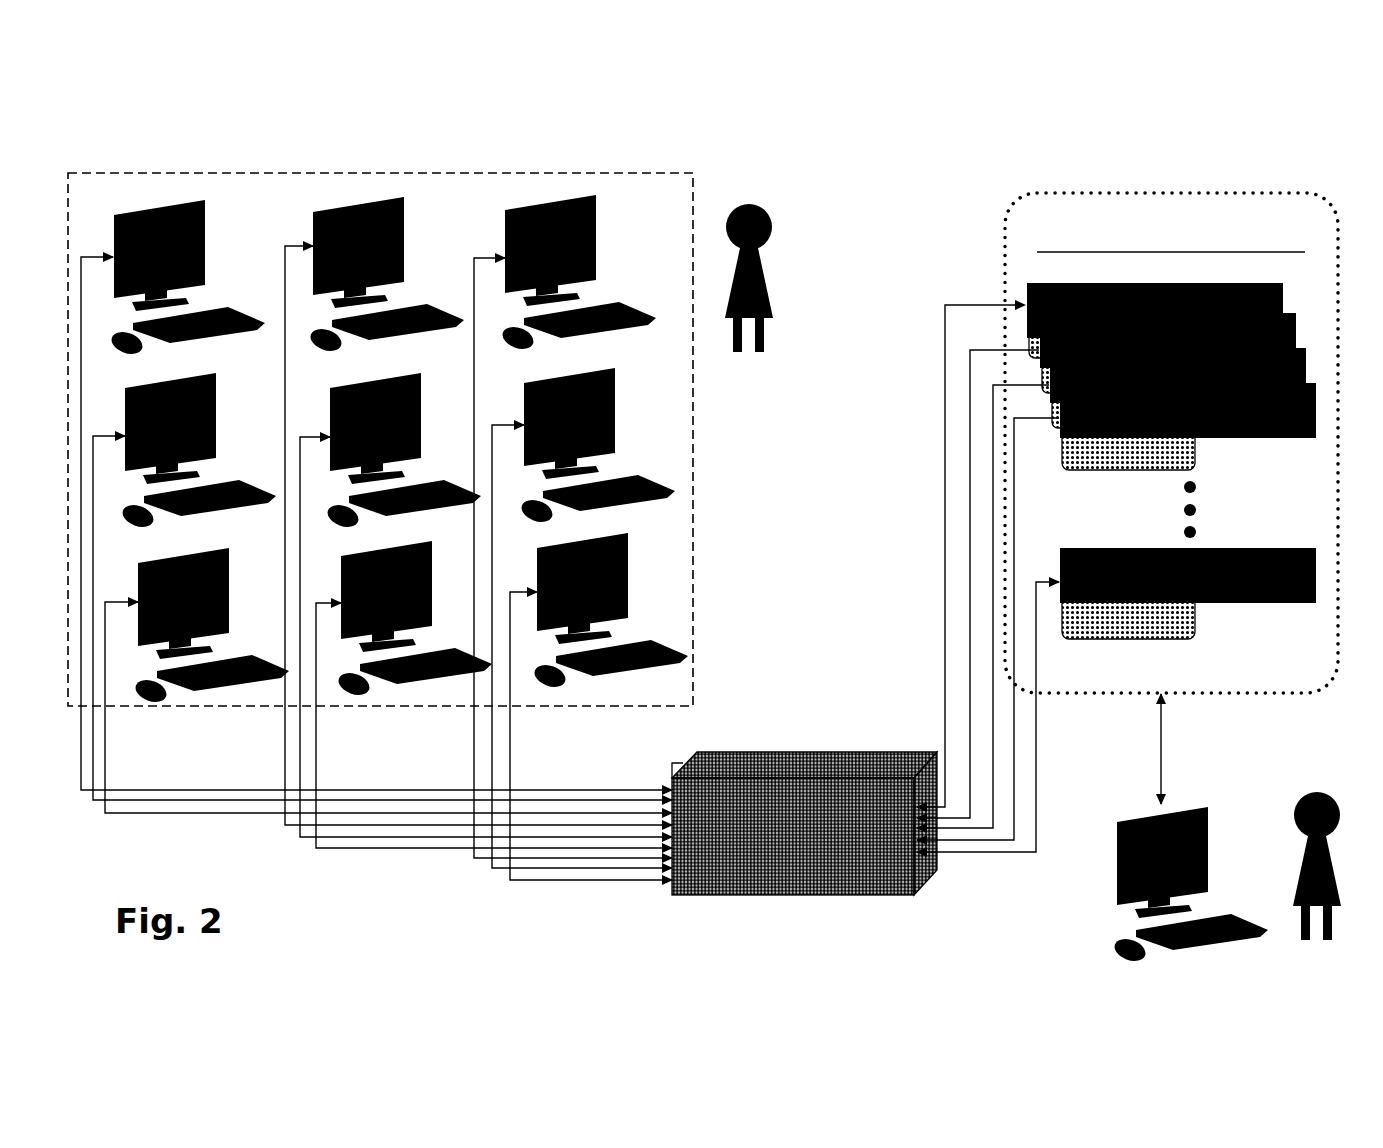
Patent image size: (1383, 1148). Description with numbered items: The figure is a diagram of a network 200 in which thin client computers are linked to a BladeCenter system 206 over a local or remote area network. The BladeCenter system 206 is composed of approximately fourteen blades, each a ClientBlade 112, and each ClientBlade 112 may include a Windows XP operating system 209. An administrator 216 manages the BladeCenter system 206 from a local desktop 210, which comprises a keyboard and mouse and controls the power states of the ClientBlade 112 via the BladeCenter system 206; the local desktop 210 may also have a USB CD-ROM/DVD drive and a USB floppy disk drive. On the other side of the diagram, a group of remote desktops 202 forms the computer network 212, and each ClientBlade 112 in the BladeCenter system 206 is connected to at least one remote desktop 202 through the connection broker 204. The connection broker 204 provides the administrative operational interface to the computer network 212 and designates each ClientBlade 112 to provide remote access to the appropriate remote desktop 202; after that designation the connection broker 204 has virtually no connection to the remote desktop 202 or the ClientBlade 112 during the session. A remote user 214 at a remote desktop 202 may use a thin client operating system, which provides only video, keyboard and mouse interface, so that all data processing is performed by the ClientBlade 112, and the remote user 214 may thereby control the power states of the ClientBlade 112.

The network 200 is at (778, 83).
The remote desktop 202 is at (204, 257).
The connection broker 204 is at (786, 770).
The BladeCenter system 206 is at (1207, 193).
The Windows XP operating system 209 is at (1074, 471).
The local desktop 210 is at (1210, 852).
The computer network 212 is at (300, 172).
The remote user 214 is at (767, 212).
The administrator 216 is at (1305, 796).
The ClientBlade 112 is at (1204, 481).